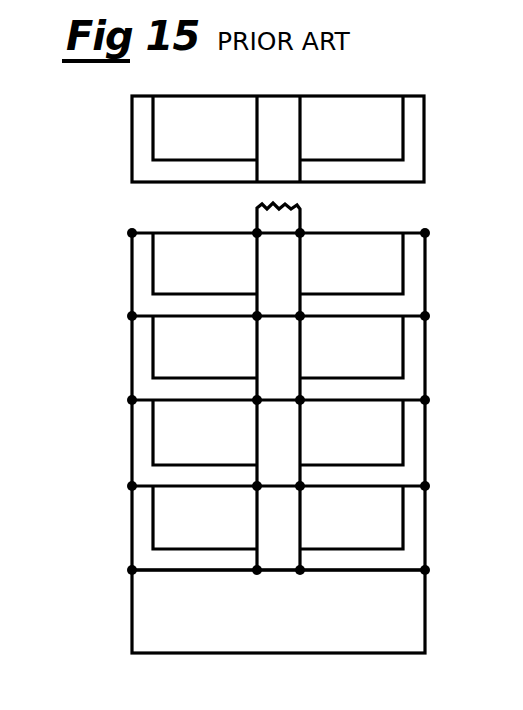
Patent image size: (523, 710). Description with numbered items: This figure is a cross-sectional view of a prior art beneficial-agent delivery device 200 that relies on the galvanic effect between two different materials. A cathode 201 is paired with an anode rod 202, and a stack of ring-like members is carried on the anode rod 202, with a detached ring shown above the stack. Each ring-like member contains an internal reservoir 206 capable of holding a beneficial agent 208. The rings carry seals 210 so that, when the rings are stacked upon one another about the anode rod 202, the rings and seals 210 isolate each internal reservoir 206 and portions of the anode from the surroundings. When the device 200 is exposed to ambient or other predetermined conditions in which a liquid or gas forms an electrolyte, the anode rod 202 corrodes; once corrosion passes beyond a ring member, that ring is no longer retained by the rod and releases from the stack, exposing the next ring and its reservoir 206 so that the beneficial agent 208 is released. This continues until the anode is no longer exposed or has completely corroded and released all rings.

The prior art device 200 is at (104, 430).
The cathode 201 is at (132, 612).
The anode rod 202 is at (257, 212).
The internal reservoir 206 is at (178, 269).
The beneficial agent 208 is at (172, 352).
The seal 210 is at (132, 316).